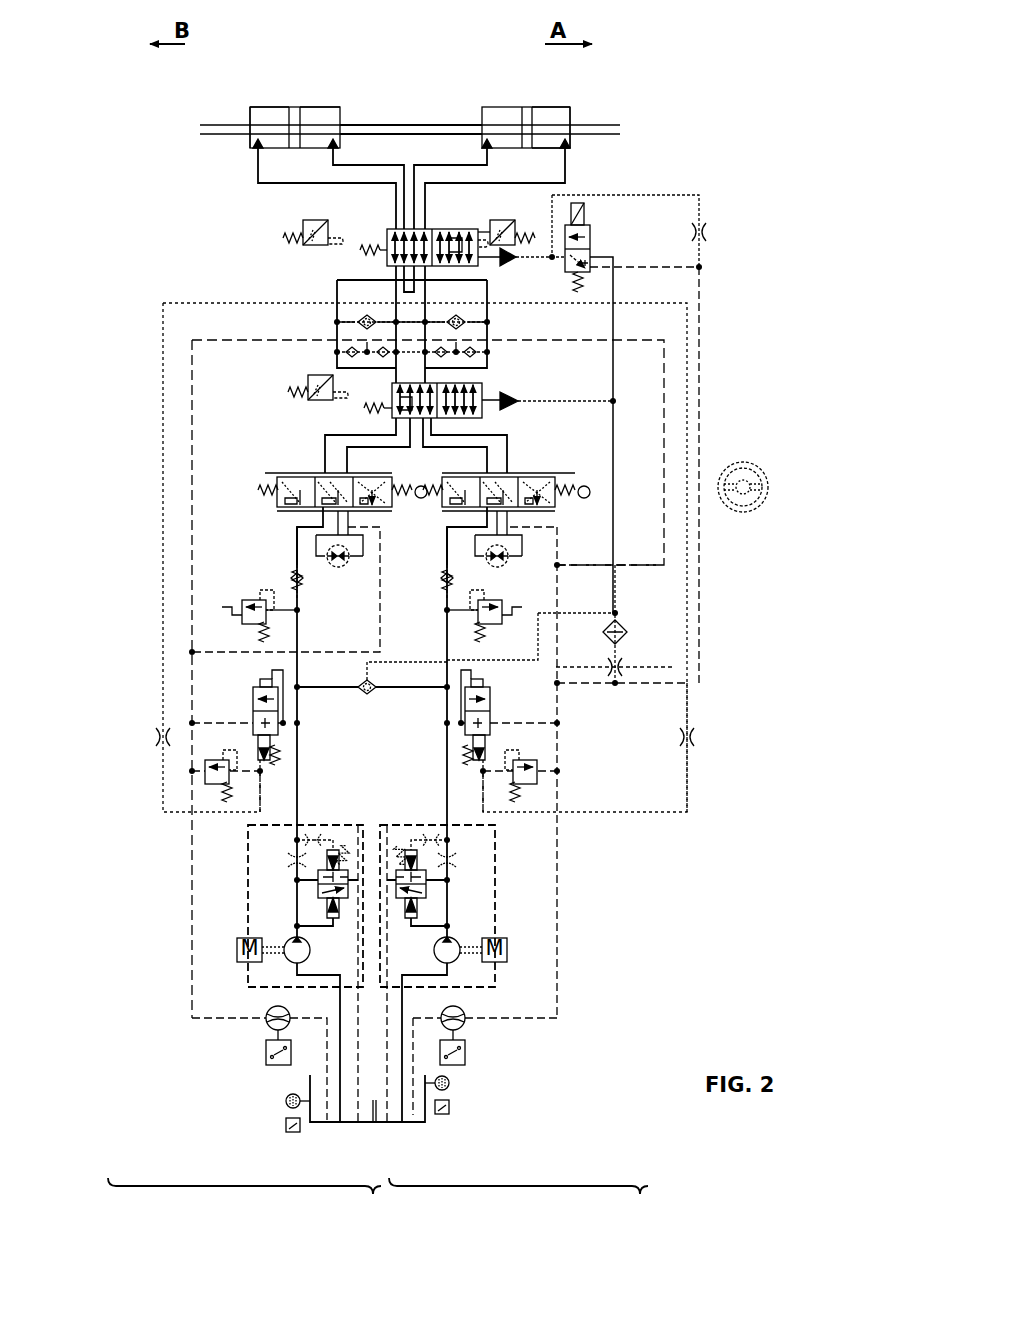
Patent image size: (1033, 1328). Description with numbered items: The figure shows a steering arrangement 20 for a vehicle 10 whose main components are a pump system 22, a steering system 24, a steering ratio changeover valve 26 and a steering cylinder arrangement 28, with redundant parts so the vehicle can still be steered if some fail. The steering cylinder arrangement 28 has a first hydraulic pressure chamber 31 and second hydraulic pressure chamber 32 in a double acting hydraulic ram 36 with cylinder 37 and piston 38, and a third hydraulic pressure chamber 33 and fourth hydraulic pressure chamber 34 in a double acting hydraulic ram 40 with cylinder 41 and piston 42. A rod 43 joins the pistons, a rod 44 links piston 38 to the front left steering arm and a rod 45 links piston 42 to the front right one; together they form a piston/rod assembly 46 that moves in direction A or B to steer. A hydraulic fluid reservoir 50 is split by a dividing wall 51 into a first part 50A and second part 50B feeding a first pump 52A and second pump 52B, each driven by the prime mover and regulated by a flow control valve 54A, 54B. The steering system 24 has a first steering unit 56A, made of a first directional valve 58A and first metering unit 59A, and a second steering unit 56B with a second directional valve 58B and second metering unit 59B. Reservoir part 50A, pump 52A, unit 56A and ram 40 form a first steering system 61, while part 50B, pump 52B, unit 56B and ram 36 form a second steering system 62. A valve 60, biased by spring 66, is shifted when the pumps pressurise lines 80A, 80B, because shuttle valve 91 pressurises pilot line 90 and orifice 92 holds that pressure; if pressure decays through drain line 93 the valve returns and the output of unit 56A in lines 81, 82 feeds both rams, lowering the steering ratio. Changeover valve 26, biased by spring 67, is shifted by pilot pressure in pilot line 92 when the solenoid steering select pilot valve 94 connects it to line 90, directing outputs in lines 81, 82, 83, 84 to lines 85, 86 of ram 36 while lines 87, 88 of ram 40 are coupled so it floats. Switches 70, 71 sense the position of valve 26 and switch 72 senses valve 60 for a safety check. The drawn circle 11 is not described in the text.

The vehicle 10 is at (727, 340).
The axis / pivot 11 is at (769, 478).
The steering arrangement 20 is at (757, 372).
The pump system 22 is at (612, 889).
The steering system 24 is at (712, 572).
The steering ratio changeover valve 26 is at (452, 228).
The steering cylinder arrangement 28 is at (697, 94).
The first hydraulic pressure chamber 31 is at (262, 108).
The second hydraulic pressure chamber 32 is at (318, 107).
The third hydraulic pressure chamber 33 is at (493, 115).
The fourth hydraulic pressure chamber 34 is at (552, 108).
The double acting hydraulic ram 36 is at (272, 107).
The cylinder 37 is at (250, 110).
The piston 38 is at (294, 107).
The double acting hydraulic ram 40 is at (572, 115).
The cylinder 41 is at (566, 108).
The piston 42 is at (527, 107).
The rod 43 is at (357, 124).
The rod 44 is at (210, 135).
The rod 45 is at (602, 127).
The piston/rod assembly 46 is at (405, 124).
The hydraulic fluid reservoir 50 is at (342, 1143).
The first part of the hydraulic fluid reservoir 50A is at (405, 1112).
The second part of the hydraulic fluid reservoir 50B is at (312, 1120).
The dividing wall 51 is at (377, 1123).
The first pump 52A is at (455, 963).
The second pump 52B is at (284, 960).
The flow control valve 54A is at (480, 903).
The flow control valve 54B is at (242, 908).
The first steering unit 56A is at (596, 470).
The second steering unit 56B is at (233, 490).
The first directional valve 58A is at (531, 476).
The second directional valve 58B is at (284, 476).
The first metering unit 59A is at (509, 562).
The second metering unit 59B is at (351, 568).
The valve 60 is at (482, 388).
The first steering system 61 is at (518, 1197).
The second steering system 62 is at (244, 1197).
The spring 66 is at (364, 408).
The spring 67 is at (358, 252).
The switch 70 is at (500, 224).
The switch 71 is at (300, 235).
The switch 72 is at (312, 376).
The hydraulic line 80A is at (446, 783).
The hydraulic line 80B is at (299, 769).
The hydraulic line 81 is at (452, 449).
The hydraulic line 82 is at (519, 412).
The hydraulic line 83 is at (326, 436).
The hydraulic line 84 is at (395, 449).
The line 85 is at (258, 176).
The line 86 is at (373, 165).
The line 87 is at (456, 158).
The line 88 is at (566, 165).
The pilot line 90 is at (580, 612).
The shuttle valve 91 is at (371, 694).
The orifice / pilot line 92 is at (533, 262).
The drain line 93 is at (700, 287).
The steering select pilot valve 94 is at (585, 225).